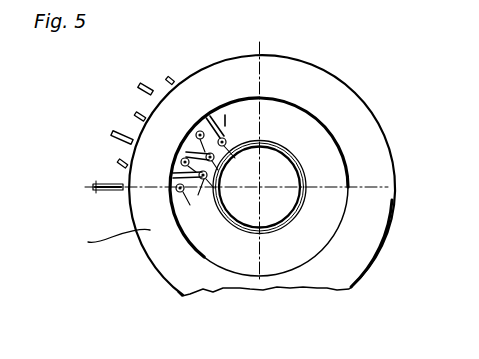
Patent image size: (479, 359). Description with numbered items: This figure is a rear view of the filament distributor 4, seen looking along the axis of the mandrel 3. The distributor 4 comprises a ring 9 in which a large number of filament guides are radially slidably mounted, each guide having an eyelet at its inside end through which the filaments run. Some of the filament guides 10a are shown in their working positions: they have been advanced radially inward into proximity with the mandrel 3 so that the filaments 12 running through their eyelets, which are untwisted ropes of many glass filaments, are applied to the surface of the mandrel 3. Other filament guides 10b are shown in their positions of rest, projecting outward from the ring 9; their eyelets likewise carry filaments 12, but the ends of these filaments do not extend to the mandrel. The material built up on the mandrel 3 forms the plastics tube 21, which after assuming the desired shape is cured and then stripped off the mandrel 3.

The mandrel 3 is at (242, 232).
The filament distributor 4 is at (403, 127).
The ring 9 is at (110, 239).
The filament guides in working position 10a is at (173, 77).
The filament guides in position of rest 10b is at (150, 87).
The filaments 12 is at (204, 196).
The plastics tube 21 is at (287, 148).